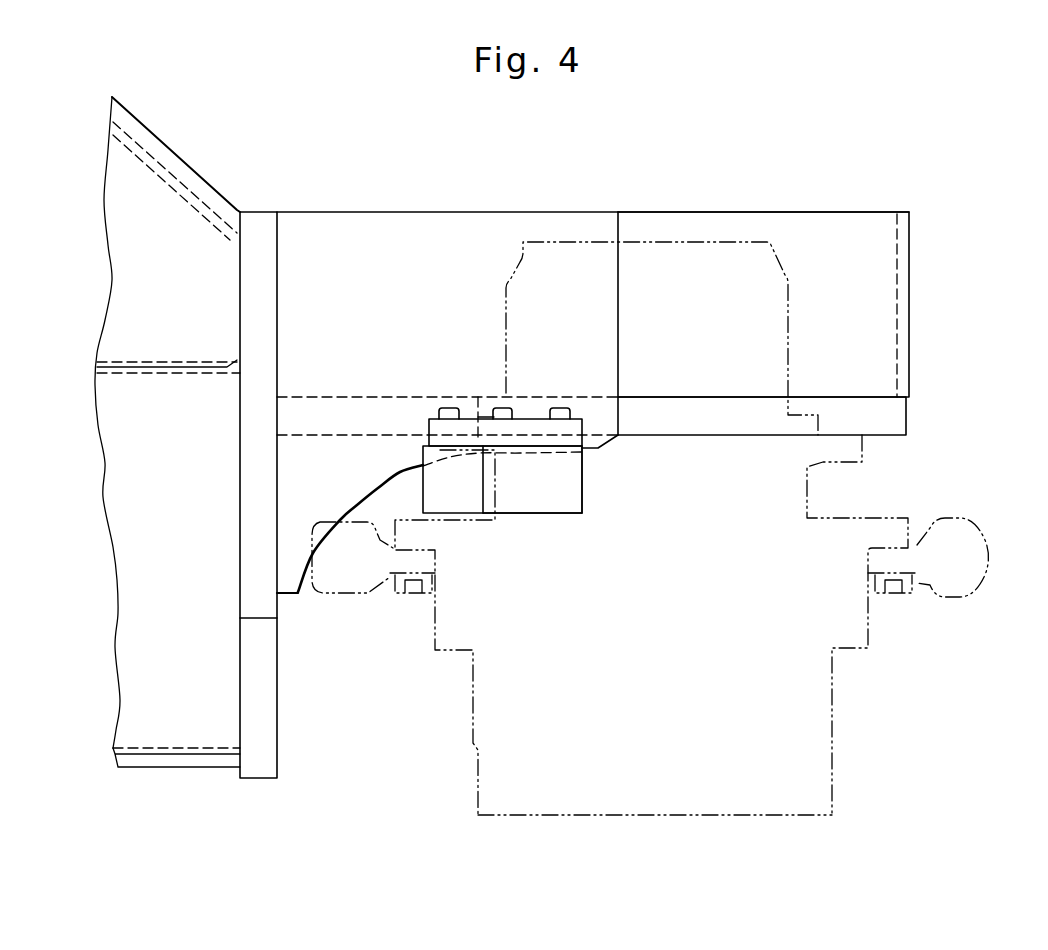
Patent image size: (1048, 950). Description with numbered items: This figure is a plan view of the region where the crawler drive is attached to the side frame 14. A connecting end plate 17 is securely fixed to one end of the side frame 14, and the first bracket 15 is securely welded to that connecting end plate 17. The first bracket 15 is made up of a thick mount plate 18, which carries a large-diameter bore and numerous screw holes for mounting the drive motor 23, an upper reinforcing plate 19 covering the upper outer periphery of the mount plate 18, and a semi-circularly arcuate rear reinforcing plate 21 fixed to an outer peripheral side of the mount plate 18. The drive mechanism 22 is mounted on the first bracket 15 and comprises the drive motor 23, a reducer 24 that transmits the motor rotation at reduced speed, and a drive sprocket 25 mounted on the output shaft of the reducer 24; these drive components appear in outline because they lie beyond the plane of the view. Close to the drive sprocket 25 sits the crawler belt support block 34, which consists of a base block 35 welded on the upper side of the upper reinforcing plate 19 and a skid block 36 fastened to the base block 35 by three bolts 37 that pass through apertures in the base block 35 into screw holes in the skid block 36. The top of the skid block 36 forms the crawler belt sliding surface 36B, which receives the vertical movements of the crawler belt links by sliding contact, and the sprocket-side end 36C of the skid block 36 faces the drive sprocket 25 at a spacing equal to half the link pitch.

The side frame 14 is at (135, 570).
The first bracket 15 is at (790, 211).
The connecting end plate 17 is at (258, 230).
The mount plate 18 is at (887, 417).
The upper reinforcing plate 19 is at (420, 230).
The rear reinforcing plate 21 is at (872, 315).
The drive mechanism 22 is at (864, 631).
The drive motor 23 is at (692, 260).
The reducer 24 is at (822, 738).
The drive sprocket 25 is at (980, 563).
The crawler belt support block 34 is at (420, 488).
The base block 35 is at (432, 424).
The skid block 36 is at (523, 515).
The crawler belt sliding surface 36B is at (558, 500).
The sprocket-side end of the skid block 36C is at (582, 490).
The bolts 37 is at (444, 406).